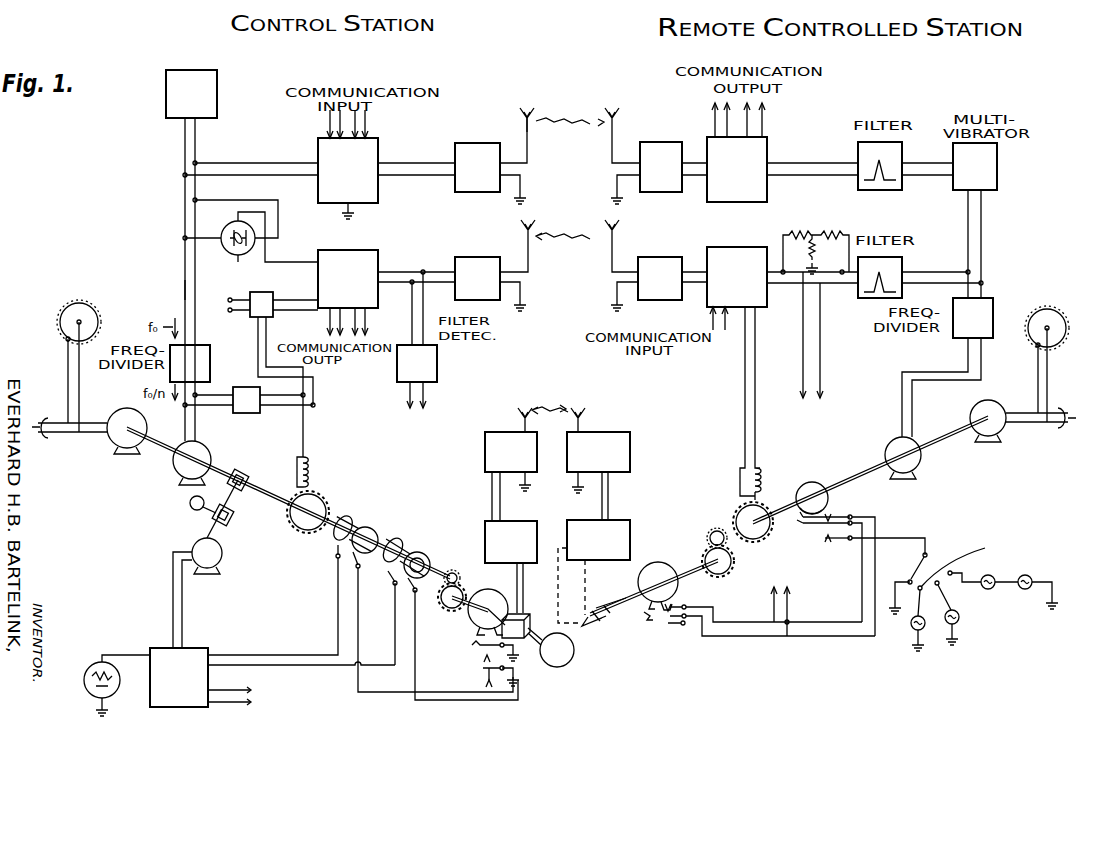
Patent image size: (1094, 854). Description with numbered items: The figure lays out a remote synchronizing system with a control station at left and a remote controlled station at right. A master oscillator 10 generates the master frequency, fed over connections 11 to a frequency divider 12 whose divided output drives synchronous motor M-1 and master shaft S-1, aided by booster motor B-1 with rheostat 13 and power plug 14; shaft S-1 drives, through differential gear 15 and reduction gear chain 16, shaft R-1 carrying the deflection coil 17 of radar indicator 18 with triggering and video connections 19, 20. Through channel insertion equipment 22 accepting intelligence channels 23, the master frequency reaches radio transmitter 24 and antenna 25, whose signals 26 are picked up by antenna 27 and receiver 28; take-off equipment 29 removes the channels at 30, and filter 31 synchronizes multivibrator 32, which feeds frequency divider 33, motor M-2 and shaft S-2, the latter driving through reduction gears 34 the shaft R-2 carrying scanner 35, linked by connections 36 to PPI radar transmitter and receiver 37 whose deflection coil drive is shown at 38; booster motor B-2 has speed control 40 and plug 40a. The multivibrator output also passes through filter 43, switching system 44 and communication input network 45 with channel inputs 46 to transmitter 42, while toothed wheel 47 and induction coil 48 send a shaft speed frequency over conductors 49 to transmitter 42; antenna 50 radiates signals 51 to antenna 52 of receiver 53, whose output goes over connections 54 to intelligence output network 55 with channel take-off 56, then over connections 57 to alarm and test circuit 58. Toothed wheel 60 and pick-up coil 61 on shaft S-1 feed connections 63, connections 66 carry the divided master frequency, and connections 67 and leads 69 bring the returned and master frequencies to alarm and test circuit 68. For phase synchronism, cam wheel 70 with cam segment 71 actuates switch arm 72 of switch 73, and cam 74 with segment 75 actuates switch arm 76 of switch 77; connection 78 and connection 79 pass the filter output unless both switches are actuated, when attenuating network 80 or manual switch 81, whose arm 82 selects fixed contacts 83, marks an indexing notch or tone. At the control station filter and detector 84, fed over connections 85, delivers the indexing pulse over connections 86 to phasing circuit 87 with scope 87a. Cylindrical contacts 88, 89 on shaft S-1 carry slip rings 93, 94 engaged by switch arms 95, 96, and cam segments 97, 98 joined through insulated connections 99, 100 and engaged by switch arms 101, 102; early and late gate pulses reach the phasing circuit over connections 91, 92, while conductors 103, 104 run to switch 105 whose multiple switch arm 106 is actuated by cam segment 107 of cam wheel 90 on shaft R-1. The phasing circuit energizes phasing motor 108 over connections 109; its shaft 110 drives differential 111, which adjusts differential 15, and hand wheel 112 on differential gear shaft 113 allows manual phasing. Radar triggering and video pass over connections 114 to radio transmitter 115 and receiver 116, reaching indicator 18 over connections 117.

The master oscillator 10 is at (218, 93).
The connections 11 is at (185, 288).
The electronic frequency divider 12 is at (211, 358).
The rheostat 13 is at (59, 321).
The plug 14 is at (47, 438).
The differential gear 15 is at (247, 478).
The reduction gear chain 16 is at (454, 569).
The deflection coil 17 is at (522, 616).
The radar indicator 18 is at (530, 521).
The triggering connection 19 is at (516, 573).
The video connection 20 is at (527, 573).
The communication channel insertion equipment 22 is at (368, 193).
The additional communication or intelligence channels 23 is at (335, 126).
The carrier transmitter 24 is at (475, 194).
The antenna 25 is at (527, 121).
The radio signals 26 is at (567, 120).
The antenna 27 is at (615, 128).
The radio receiver 28 is at (656, 142).
The take-off equipment 29 is at (733, 203).
The communication channel take-off 30 is at (735, 126).
The filter 31 is at (899, 152).
The multivibrator 32 is at (997, 168).
The frequency divider 33 is at (985, 299).
The reduction gears 34 is at (708, 538).
The radar antenna or scanner 35 is at (598, 620).
The connections 36 is at (569, 585).
The PPI radar transmitter and receiver 37 is at (592, 520).
The deflection coil drive connection 38 is at (572, 587).
The speed control 40 is at (1046, 310).
The socket power plug 40a is at (1060, 413).
The transmitter 42 is at (661, 257).
The filter 43 is at (871, 298).
The switching system connections 44 is at (791, 284).
The communication input network 45 is at (746, 247).
The additional communication channel inputs 46 is at (712, 322).
The toothed wheel 47 is at (756, 540).
The induction coil 48 is at (740, 480).
The conductors 49 is at (745, 412).
The antenna 50 is at (609, 262).
The signals 51 is at (571, 233).
The receiving antenna 52 is at (530, 260).
The radio receiver 53 is at (477, 257).
The connections 54 is at (395, 272).
The intelligence output network 55 is at (343, 258).
The communication channel take-off 56 is at (365, 320).
The connections 57 is at (296, 301).
The alarm and test circuit 58 is at (252, 293).
The toothed wheel 60 is at (320, 498).
The pick-up coil 61 is at (297, 468).
The connections 63 is at (306, 410).
The connections 66 is at (226, 408).
The connections 67 is at (291, 262).
The alarm and test circuit 68 is at (229, 252).
The leads 69 is at (218, 210).
The cam wheel 70 is at (643, 570).
The cam segment 71 is at (674, 596).
The switch arm 72 is at (655, 620).
The switch 73 is at (676, 648).
The cam 74 is at (808, 482).
The cam segment 75 is at (828, 510).
The switch arm 76 is at (815, 524).
The switch 77 is at (838, 540).
The connection 78 is at (822, 390).
The connection 79 is at (800, 390).
The attenuating network 80 is at (812, 235).
The manually actuated switch 81 is at (957, 544).
The switch arm 82 is at (922, 556).
The fixed contacts 83 is at (978, 592).
The filter and detector 84 is at (437, 362).
The connections 85 is at (412, 318).
The connections 86 is at (240, 702).
The phasing circuit 87 is at (180, 706).
The cathode ray tube viewing scope 87a is at (96, 678).
The cylindrical contact 88 is at (379, 521).
The cylindrical contact 89 is at (421, 544).
The cam wheel 90 is at (496, 594).
The connections 91 is at (236, 655).
The connections 92 is at (281, 666).
The metal slip ring 93 is at (338, 535).
The metal slip ring 94 is at (423, 559).
The switch arm 95 is at (337, 556).
The switch arm 96 is at (444, 597).
The metal cam segment 97 is at (372, 533).
The metal cam segment 98 is at (360, 568).
The insulated connection 99 is at (345, 525).
The insulated connection 100 is at (412, 596).
The second switch arm 101 is at (352, 571).
The second switch arm 102 is at (392, 588).
The conductor 103 is at (413, 690).
The conductor 104 is at (358, 690).
The switch 105 is at (476, 661).
The multiple switch arm 106 is at (480, 672).
The cam segment 107 is at (481, 641).
The phasing motor 108 is at (222, 556).
The connections 109 is at (182, 534).
The shaft 110 is at (229, 522).
The differential 111 is at (214, 517).
The hand wheel 112 is at (191, 499).
The differential gear shaft 113 is at (216, 510).
The connections 114 is at (609, 490).
The radio transmitter 115 is at (630, 453).
The radio receiver 116 is at (485, 451).
The connections 117 is at (492, 503).
The booster motor B-1 is at (122, 450).
The self-starting synchronous motor M-1 is at (174, 467).
The master shaft S-1 is at (240, 476).
The booster motor B-2 is at (1004, 432).
The synchronous motor M-2 is at (921, 453).
The shaft S-2 is at (855, 472).
The shaft R-1 is at (466, 627).
The shaft R-2 is at (611, 606).